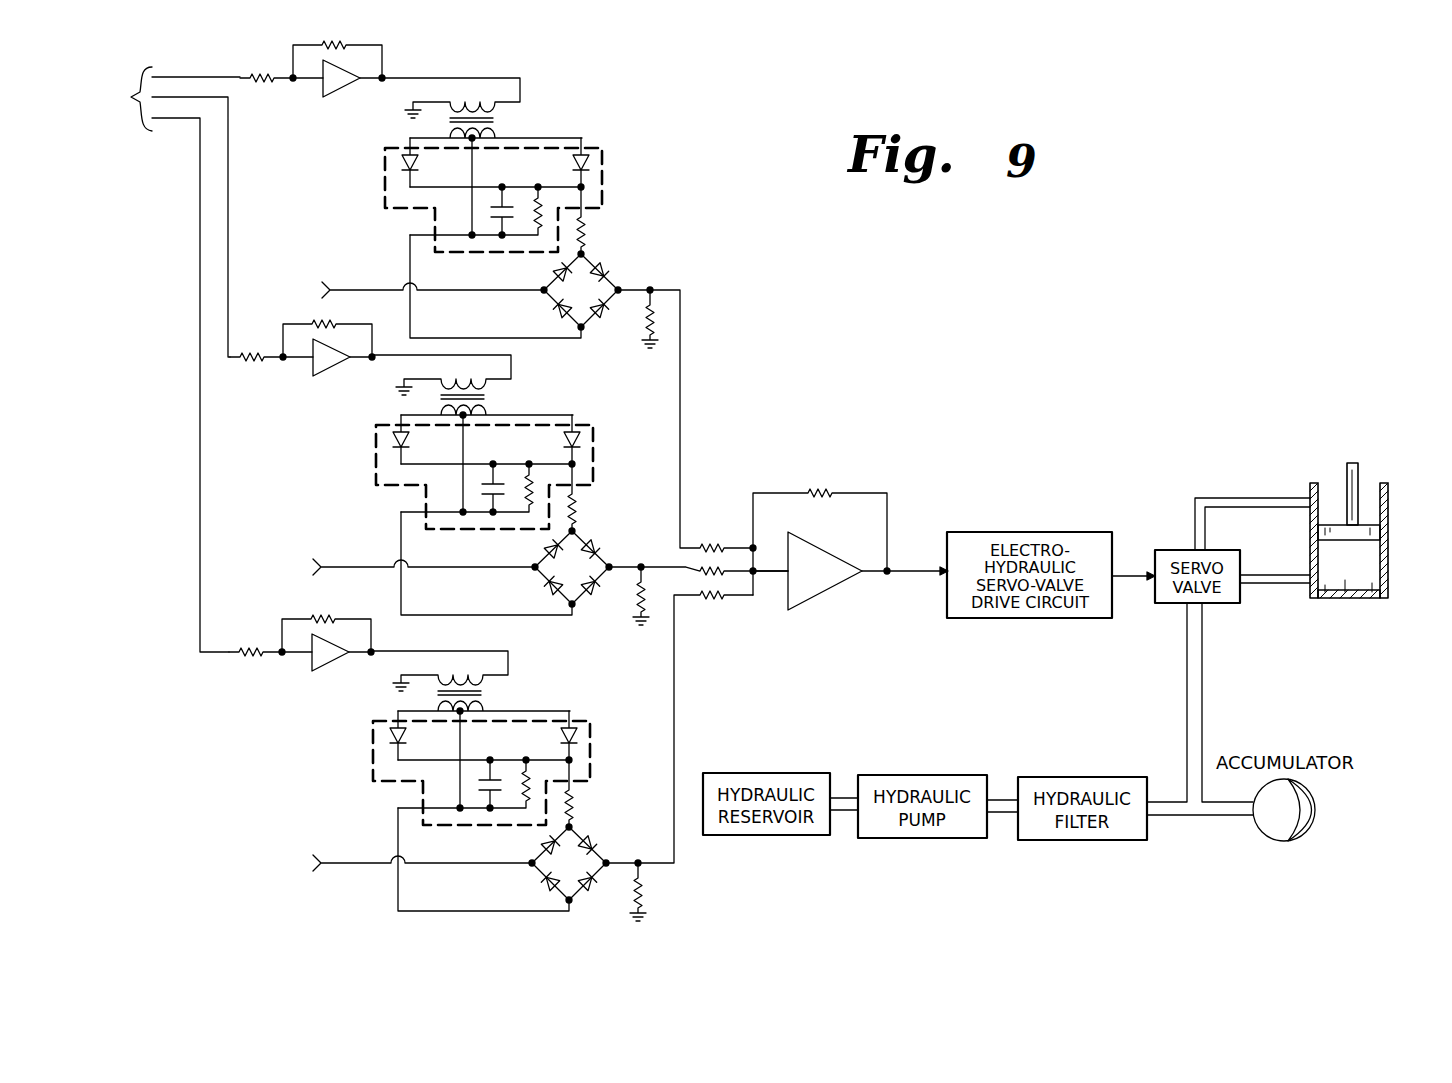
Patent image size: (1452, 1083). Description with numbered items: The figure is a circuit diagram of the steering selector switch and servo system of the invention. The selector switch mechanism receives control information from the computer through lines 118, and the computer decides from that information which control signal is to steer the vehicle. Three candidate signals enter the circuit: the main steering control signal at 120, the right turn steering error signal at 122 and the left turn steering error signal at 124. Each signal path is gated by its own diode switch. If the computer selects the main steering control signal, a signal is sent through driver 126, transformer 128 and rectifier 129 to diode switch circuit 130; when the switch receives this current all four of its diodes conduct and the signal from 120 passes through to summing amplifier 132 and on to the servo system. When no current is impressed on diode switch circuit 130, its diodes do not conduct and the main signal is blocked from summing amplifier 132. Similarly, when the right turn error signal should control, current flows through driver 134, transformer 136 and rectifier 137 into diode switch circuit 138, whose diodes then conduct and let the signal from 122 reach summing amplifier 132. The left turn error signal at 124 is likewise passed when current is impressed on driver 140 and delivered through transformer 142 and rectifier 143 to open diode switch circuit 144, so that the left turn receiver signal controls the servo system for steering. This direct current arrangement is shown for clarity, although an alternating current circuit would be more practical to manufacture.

The lines 118 is at (165, 359).
The main steering control signal input 120 is at (350, 565).
The right turn steering error signal input 122 is at (362, 288).
The left turn steering error signal input 124 is at (347, 862).
The driver 126 is at (308, 363).
The transformer 128 is at (490, 394).
The rectifier 129 is at (596, 431).
The diode switch circuit 130 is at (596, 548).
The summing amplifier 132 is at (822, 600).
The driver 134 is at (347, 90).
The transformer 136 is at (503, 122).
The rectifier 137 is at (603, 154).
The diode switch circuit 138 is at (608, 275).
The driver 140 is at (308, 662).
The transformer 142 is at (485, 690).
The rectifier 143 is at (590, 722).
The diode switch circuit 144 is at (596, 841).